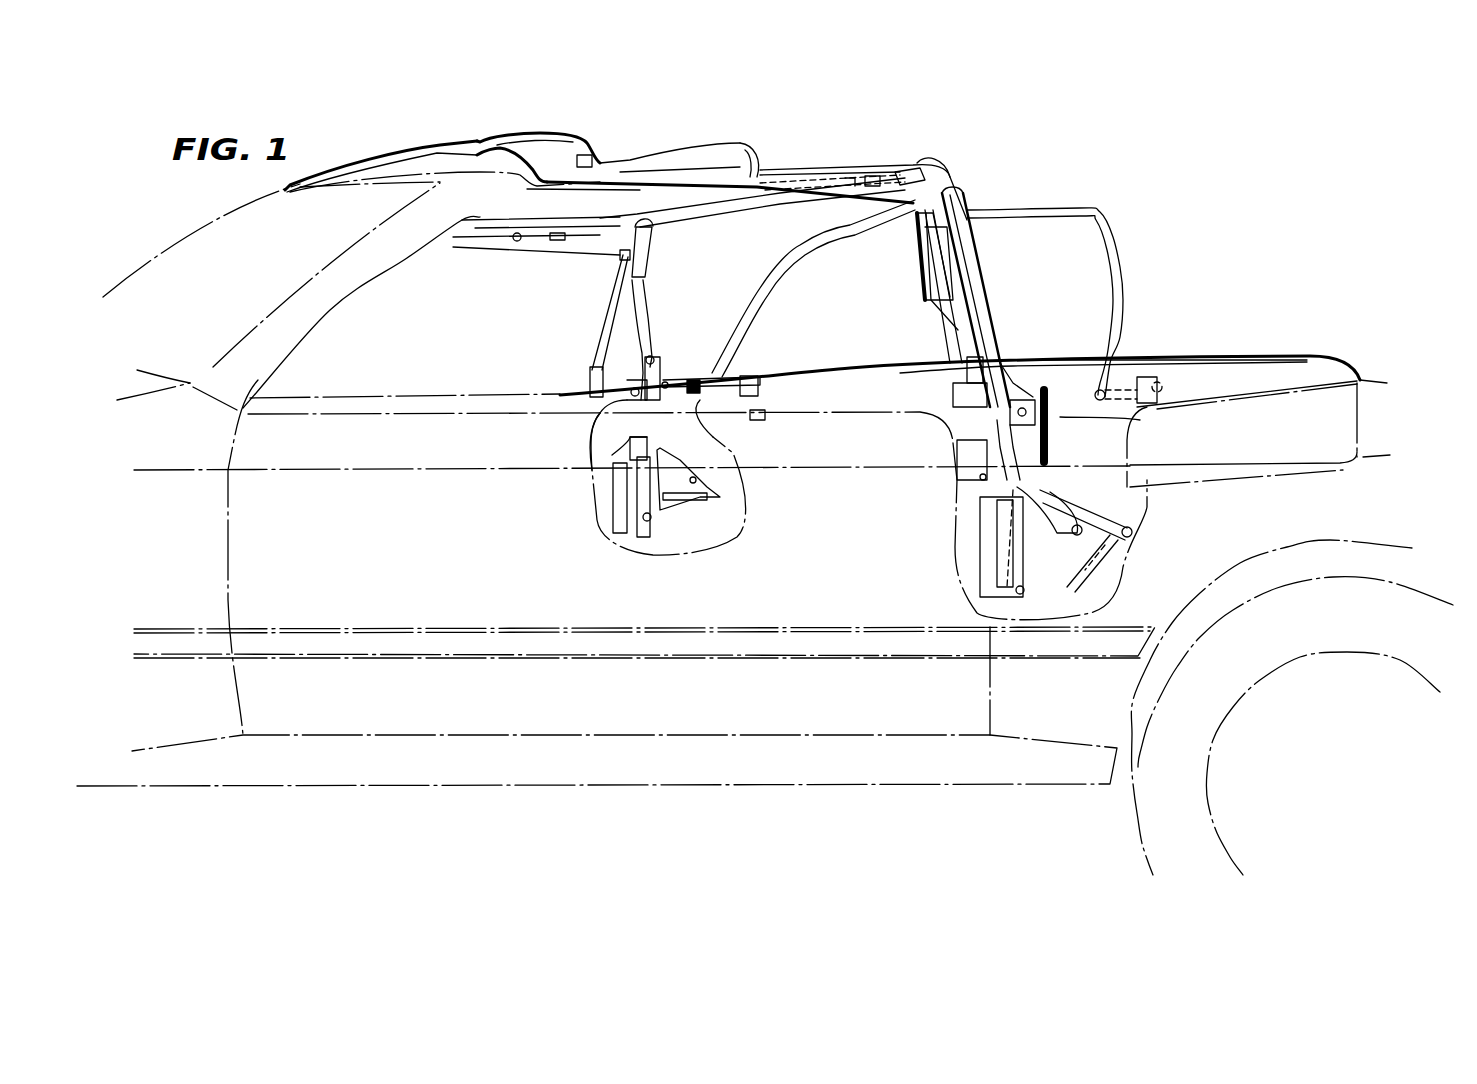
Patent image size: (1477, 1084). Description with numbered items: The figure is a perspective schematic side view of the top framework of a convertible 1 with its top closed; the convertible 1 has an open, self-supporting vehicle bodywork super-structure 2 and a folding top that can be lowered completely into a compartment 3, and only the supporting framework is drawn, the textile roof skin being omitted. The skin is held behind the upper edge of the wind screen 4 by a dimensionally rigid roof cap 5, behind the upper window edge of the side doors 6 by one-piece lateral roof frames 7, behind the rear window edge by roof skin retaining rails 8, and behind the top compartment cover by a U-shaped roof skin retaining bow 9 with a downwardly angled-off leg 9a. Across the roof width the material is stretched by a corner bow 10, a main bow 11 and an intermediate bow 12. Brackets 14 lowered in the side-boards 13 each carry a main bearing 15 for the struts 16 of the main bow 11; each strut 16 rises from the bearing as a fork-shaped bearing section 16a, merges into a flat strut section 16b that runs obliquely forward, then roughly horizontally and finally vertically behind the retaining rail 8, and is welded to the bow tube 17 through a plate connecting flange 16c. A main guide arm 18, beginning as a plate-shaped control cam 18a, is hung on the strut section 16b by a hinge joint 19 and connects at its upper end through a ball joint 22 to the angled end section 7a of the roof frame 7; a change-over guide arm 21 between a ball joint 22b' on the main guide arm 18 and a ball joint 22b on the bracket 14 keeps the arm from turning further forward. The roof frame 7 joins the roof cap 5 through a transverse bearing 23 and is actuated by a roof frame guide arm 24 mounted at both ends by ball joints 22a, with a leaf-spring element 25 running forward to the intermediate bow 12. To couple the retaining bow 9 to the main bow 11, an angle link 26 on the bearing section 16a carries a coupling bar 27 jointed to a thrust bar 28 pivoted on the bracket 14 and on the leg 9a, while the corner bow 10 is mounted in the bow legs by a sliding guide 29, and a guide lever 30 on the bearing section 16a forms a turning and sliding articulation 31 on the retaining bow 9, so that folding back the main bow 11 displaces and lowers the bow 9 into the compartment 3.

The convertible 1 is at (160, 236).
The vehicle bodywork super-structure 2 is at (320, 790).
The compartment for the top 3 is at (1350, 395).
The wind screen 4 is at (296, 238).
The roof cap 5 is at (440, 143).
The side doors 6 is at (429, 593).
The lateral roof frame 7 is at (625, 176).
The end section of the lateral roof frame 7a is at (622, 260).
The roof skin retaining rail 8 is at (985, 300).
The roof skin retaining bow 9 is at (1263, 373).
The downwardly angled-off leg of the roof skin retaining bow 9a is at (1132, 422).
The corner bow 10 is at (1088, 210).
The main bow 11 is at (932, 160).
The intermediate bow 12 is at (728, 150).
The side-board 13 is at (1294, 513).
The bracket 14 is at (620, 550).
The main bearing 15 is at (650, 522).
The strut 16 is at (600, 345).
The bearing section 16a is at (735, 470).
The strut section 16b is at (612, 328).
The plate connecting flange 16c is at (657, 243).
The bow tube 17 is at (903, 170).
The main guide arm 18 is at (638, 334).
The control cam 18a is at (600, 415).
The hinge joint 19 is at (668, 366).
The change-over guide arm 21 is at (612, 455).
The ball joint 22 is at (650, 280).
The ball joints 22a is at (772, 178).
The ball joint on the bracket 22b is at (781, 484).
The ball joint on the main guide arm 22b' is at (690, 322).
The transverse bearing 23 is at (597, 163).
The roof frame guide arm 24 is at (870, 178).
The leaf-spring element 25 is at (848, 180).
The angle link 26 is at (1120, 558).
The coupling bar 27 is at (1133, 531).
The thrust bar 28 is at (1120, 515).
The sliding guide 29 is at (757, 377).
The guide lever 30 is at (720, 420).
The turning and sliding articulation 31 is at (760, 418).